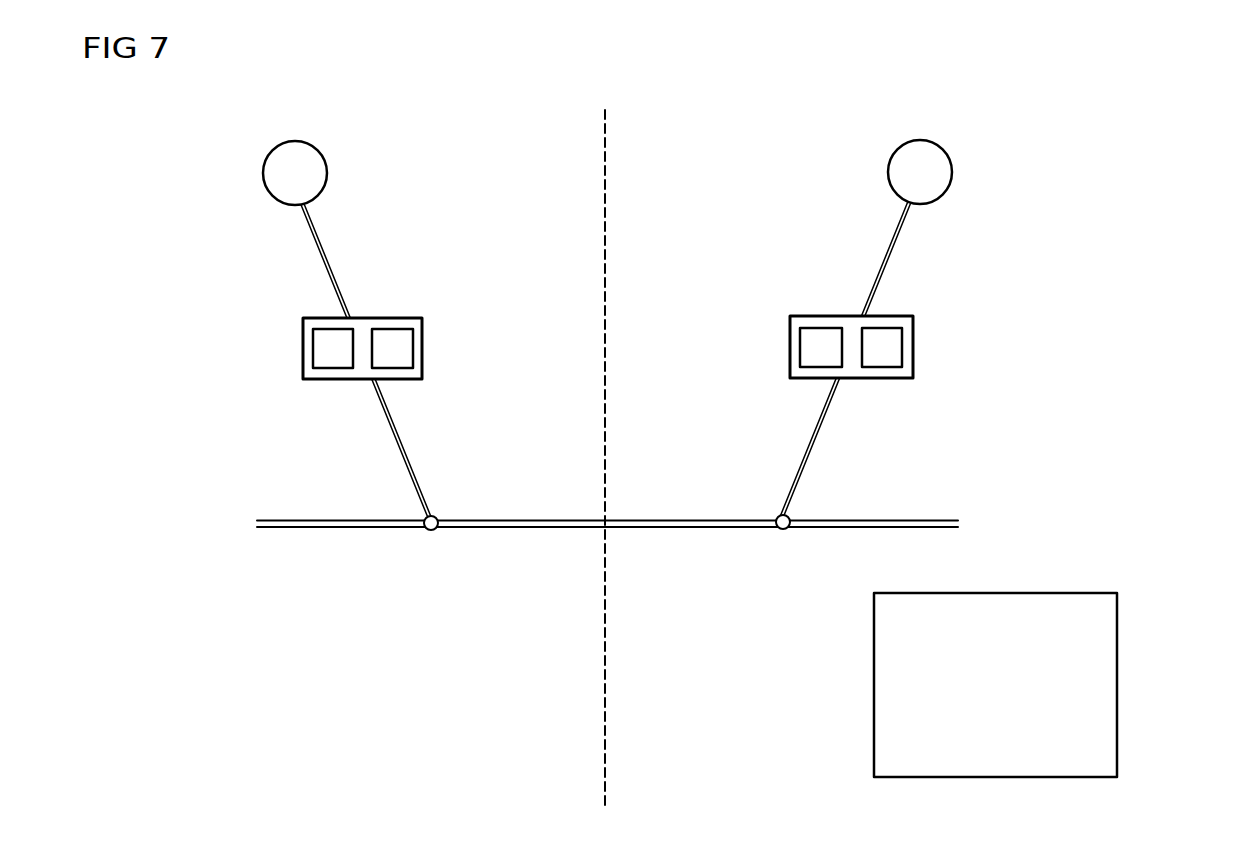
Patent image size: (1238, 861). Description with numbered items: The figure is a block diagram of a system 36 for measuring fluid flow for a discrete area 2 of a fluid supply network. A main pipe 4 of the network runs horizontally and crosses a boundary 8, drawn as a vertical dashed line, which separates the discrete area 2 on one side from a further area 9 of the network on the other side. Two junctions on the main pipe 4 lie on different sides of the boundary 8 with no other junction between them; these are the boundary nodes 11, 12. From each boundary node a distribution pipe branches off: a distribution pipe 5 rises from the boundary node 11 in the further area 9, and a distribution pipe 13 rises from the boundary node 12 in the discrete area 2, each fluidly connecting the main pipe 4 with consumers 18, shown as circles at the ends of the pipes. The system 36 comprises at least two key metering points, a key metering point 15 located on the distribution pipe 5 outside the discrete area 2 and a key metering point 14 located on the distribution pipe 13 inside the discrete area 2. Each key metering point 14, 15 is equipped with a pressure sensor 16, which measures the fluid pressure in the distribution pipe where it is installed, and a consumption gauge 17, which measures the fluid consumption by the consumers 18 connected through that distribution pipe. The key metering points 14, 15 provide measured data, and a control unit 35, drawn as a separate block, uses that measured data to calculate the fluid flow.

The discrete area 2 is at (732, 777).
The main pipe 4 is at (545, 529).
The distribution pipe 5 is at (409, 452).
The boundary 8 is at (606, 150).
The further area 9 is at (252, 699).
The boundary node 11 is at (431, 531).
The boundary node 12 is at (782, 530).
The distribution pipe 13 is at (808, 452).
The key metering point 14 is at (913, 347).
The key metering point 15 is at (303, 348).
The pressure sensor 16 is at (338, 369).
The consumption gauge 17 is at (395, 328).
The consumers 18 is at (266, 190).
The control unit 35 is at (1043, 593).
The system 36 is at (1130, 161).